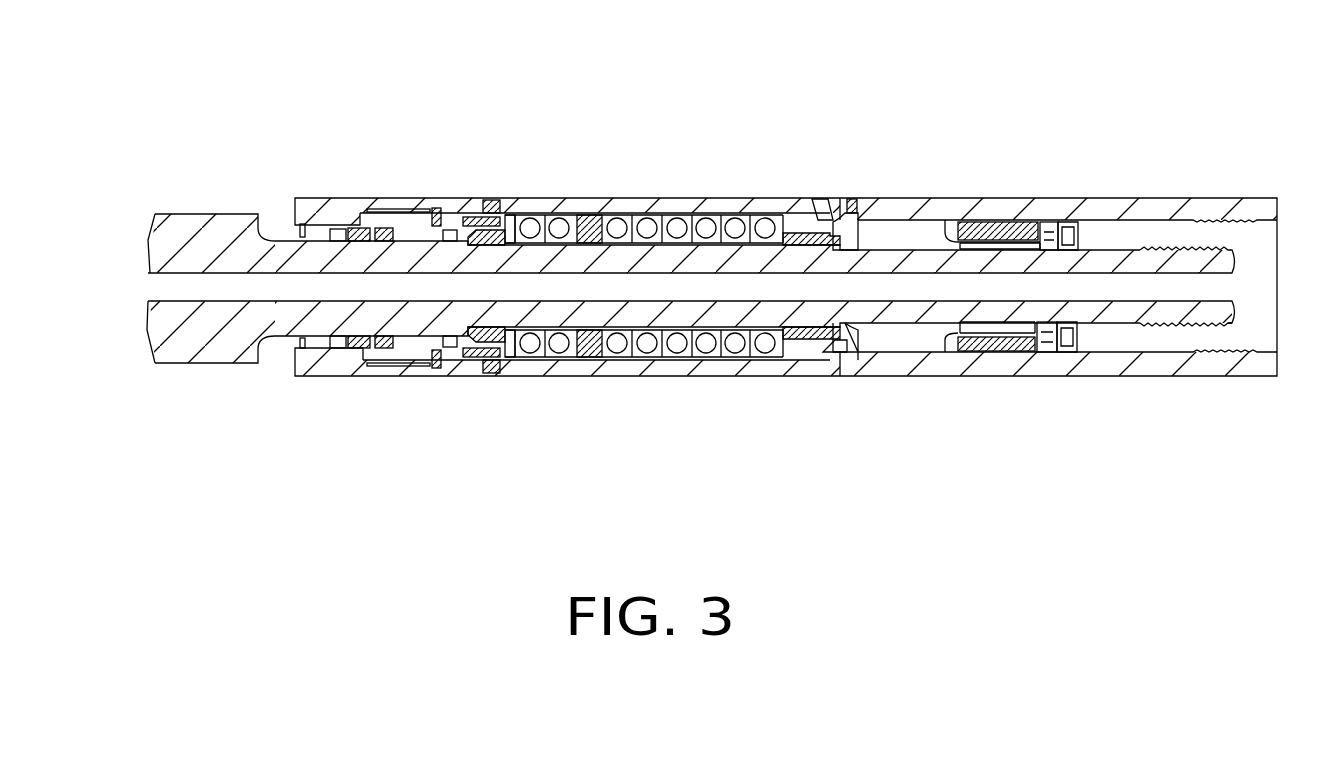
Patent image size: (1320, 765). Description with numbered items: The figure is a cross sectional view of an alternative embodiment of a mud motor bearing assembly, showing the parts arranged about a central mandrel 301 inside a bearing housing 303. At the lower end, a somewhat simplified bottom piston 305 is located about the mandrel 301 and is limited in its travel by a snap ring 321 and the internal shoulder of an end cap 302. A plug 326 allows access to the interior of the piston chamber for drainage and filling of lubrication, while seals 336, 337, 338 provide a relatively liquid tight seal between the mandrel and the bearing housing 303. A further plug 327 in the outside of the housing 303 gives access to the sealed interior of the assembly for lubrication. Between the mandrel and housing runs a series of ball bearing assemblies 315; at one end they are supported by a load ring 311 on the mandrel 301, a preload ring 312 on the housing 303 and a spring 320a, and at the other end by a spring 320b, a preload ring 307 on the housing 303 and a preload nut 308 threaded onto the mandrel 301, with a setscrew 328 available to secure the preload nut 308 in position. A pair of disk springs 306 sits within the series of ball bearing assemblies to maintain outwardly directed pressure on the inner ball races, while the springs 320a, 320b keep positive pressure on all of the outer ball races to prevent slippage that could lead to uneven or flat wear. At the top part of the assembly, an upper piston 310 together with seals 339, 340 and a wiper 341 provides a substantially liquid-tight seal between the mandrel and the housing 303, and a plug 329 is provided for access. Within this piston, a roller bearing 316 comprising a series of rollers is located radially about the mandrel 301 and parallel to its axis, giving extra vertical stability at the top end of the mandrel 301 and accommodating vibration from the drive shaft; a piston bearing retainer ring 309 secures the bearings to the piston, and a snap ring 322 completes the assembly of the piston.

The mandrel 301 is at (186, 232).
The end cap 302 is at (310, 376).
The bearing housing 303 is at (647, 367).
The bottom piston 305 is at (338, 233).
The disk springs 306 is at (592, 215).
The preload ring 307 is at (815, 215).
The preload nut 308 is at (820, 340).
The piston bearing retainer ring 309 is at (972, 340).
The upper piston 310 is at (1010, 220).
The load ring 311 is at (509, 215).
The preload ring 312 is at (497, 215).
The ball bearing assemblies 315 is at (645, 216).
The roller bearing 316 is at (1012, 340).
The spring 320a is at (478, 343).
The spring 320b is at (790, 222).
The snap ring 321 is at (276, 218).
The snap ring 322 is at (946, 222).
The plug 326 is at (432, 220).
The plug 327 is at (478, 204).
The setscrew 328 is at (832, 233).
The plug 329 is at (1090, 221).
The seal 336 is at (358, 228).
The seal 337 is at (364, 350).
The seal 338 is at (448, 368).
The seal 339 is at (1063, 345).
The seal 340 is at (1060, 222).
The wiper 341 is at (1078, 325).